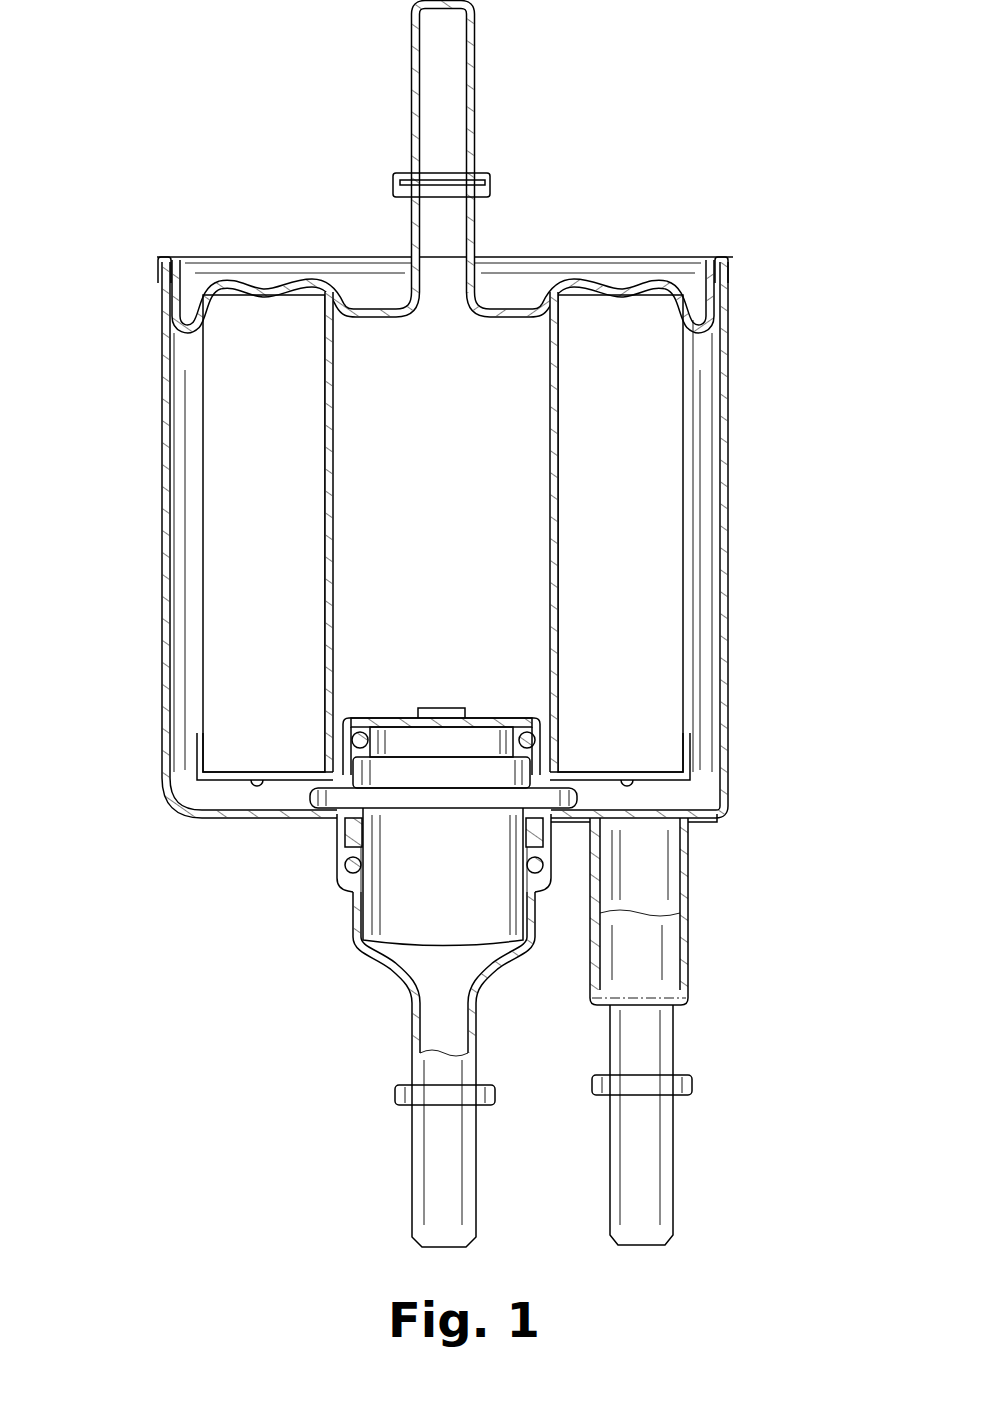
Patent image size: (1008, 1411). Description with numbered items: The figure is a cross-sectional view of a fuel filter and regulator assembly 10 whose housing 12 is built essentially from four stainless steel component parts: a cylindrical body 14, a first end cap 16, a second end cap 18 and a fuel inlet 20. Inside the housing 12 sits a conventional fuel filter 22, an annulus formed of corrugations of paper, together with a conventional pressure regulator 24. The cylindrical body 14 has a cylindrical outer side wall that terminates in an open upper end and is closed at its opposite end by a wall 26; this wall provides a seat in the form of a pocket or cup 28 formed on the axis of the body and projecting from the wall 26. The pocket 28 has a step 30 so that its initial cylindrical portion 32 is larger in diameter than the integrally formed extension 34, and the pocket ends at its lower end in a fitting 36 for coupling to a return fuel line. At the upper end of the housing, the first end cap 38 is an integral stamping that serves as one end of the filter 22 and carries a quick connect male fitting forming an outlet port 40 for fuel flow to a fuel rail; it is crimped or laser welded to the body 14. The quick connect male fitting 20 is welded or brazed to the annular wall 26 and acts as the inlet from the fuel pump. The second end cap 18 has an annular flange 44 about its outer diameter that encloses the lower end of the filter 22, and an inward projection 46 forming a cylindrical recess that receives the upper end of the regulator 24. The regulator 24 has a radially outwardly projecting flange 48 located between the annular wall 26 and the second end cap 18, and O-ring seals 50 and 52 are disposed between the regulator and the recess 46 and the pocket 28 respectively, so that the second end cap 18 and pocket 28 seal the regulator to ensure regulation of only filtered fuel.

The fuel filter and regulator assembly 10 is at (777, 307).
The housing 12 is at (450, 576).
The cylindrical body 14 is at (160, 533).
The first end cap 16 is at (445, 249).
The second end cap 18 is at (608, 768).
The fuel inlet 20 is at (692, 893).
The fuel filter 22 is at (455, 539).
The pressure regulator 24 is at (395, 907).
The wall 26 is at (232, 818).
The pocket or cup 28 is at (368, 965).
The step 30 is at (545, 893).
The initial cylindrical portion 32 is at (482, 887).
The extension 34 is at (540, 965).
The fitting 36 is at (435, 1069).
The first end cap 38 is at (310, 281).
The outlet port 40 is at (408, 117).
The annular flange 44 is at (185, 752).
The inward projection 46 is at (441, 703).
The radially outwardly projecting flange 48 is at (578, 798).
The O-ring seal 50 is at (525, 720).
The O-ring seal 52 is at (523, 866).